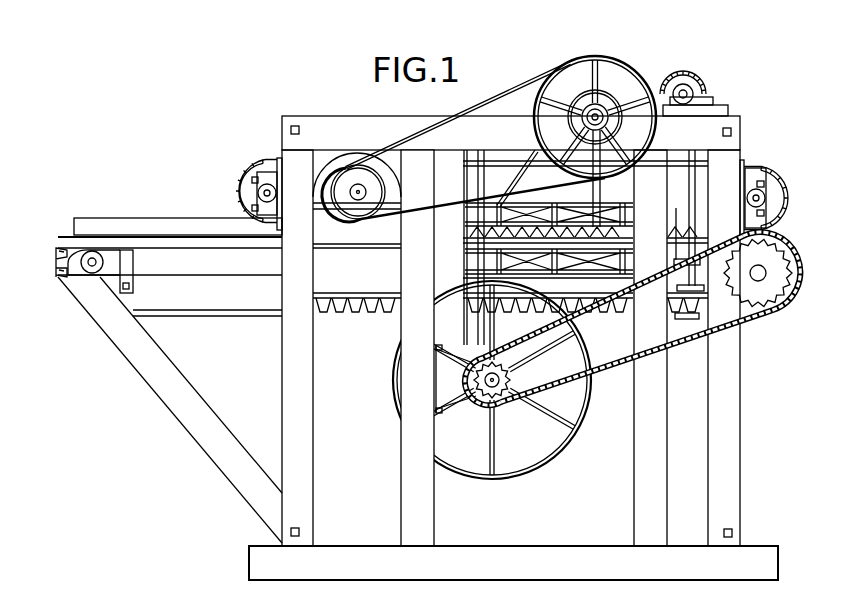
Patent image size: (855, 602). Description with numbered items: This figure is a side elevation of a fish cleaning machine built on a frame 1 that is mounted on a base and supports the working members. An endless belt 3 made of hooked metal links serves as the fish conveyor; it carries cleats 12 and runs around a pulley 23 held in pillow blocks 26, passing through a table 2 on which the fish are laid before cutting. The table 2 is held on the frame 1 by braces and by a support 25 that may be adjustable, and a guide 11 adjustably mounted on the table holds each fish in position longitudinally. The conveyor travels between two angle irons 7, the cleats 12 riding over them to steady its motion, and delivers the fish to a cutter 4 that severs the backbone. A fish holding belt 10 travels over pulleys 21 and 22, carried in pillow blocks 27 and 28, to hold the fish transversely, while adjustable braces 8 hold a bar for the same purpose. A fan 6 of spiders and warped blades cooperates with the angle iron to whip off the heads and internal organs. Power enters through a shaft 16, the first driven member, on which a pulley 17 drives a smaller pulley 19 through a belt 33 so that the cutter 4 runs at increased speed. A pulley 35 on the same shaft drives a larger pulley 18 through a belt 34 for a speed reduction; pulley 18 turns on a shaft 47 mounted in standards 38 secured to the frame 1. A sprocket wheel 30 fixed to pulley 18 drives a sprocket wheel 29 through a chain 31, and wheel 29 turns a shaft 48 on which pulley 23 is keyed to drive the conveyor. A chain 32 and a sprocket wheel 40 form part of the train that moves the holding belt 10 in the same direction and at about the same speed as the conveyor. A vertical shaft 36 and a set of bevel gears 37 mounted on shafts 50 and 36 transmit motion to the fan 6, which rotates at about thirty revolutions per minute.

The frame 1 is at (735, 416).
The table 2 is at (58, 246).
The endless belt 3 is at (346, 300).
The cutter 4 is at (357, 175).
The fan 6 is at (552, 209).
The angle irons 7 is at (702, 243).
The adjustable braces 8 is at (614, 200).
The fish holding member or belt 10 is at (747, 166).
The guide 11 is at (160, 218).
The cleats 12 is at (362, 313).
The shaft 16 is at (581, 124).
The pulley 17 is at (540, 87).
The pulley 18 is at (537, 420).
The pulley 19 is at (358, 192).
The pulley 21 is at (240, 178).
The pulley 22 is at (768, 200).
The pulley 23 is at (58, 280).
The support 25 is at (132, 266).
The pillow blocks 26 is at (109, 270).
The pillow block 27 is at (256, 197).
The pillow block 28 is at (776, 181).
The sprocket wheel 29 is at (758, 273).
The sprocket wheel 30 is at (492, 379).
The chain 31 is at (750, 311).
The chain 32 is at (714, 101).
The belt 33 is at (500, 93).
The belt 34 is at (592, 348).
The pulley 35 is at (612, 98).
The shaft 36 is at (687, 205).
The bevel gears 37 is at (693, 275).
The standards or supports 38 is at (456, 379).
The sprocket wheel 40 is at (685, 71).
The shaft 47 is at (490, 388).
The shaft 48 is at (89, 272).
The shaft 50 is at (700, 88).